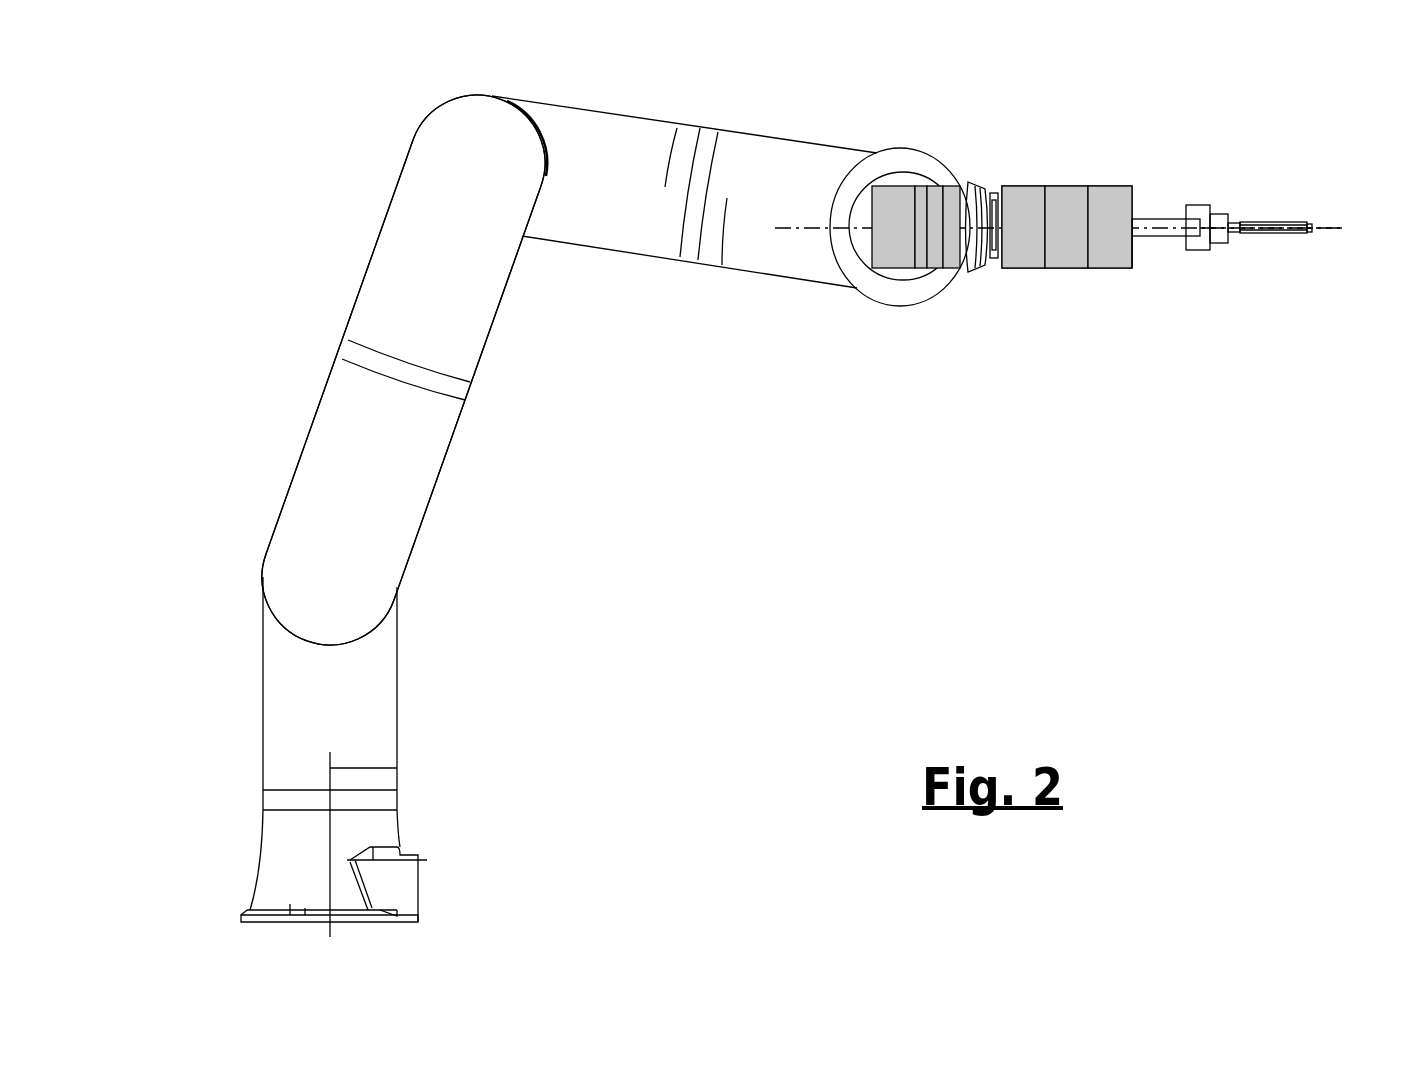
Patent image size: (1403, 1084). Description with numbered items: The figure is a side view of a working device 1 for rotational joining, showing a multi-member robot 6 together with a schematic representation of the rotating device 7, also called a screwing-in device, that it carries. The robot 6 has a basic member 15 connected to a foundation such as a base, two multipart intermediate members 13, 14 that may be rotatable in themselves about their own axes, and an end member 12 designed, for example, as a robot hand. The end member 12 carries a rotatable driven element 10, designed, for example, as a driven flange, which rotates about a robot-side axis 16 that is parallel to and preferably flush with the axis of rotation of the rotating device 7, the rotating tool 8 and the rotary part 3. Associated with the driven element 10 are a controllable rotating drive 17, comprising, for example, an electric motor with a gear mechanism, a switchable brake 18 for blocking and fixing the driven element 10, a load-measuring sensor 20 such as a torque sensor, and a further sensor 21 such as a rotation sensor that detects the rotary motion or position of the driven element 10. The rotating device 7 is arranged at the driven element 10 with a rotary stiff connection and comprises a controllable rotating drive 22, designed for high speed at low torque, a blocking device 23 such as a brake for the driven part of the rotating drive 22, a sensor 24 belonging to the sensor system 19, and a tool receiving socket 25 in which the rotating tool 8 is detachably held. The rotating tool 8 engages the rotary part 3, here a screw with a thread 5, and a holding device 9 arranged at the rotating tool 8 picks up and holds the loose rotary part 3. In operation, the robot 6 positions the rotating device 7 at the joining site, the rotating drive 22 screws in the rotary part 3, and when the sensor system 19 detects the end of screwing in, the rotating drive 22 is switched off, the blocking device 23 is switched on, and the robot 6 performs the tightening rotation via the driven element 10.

The working device 1 is at (335, 183).
The rotary part 3 is at (1310, 225).
The thread 5 is at (1297, 222).
The multi-member robot 6 is at (288, 436).
The rotating device 7 is at (1080, 172).
The rotating tool 8 is at (1178, 222).
The holding device 9 is at (1195, 212).
The driven element 10 is at (995, 197).
The end member 12 is at (907, 162).
The intermediate member 13 is at (660, 232).
The intermediate member 14 is at (427, 243).
The basic member 15 is at (307, 730).
The axis 16 is at (1322, 230).
The rotating drive 17 is at (893, 255).
The brake 18 is at (920, 263).
The sensor system 19 is at (1019, 155).
The sensor 20 is at (933, 257).
The sensor 21 is at (952, 192).
The rotating drive 22 is at (1026, 258).
The blocking device 23 is at (1107, 257).
The sensor 24 is at (1062, 258).
The tool receiving socket 25 is at (1143, 256).